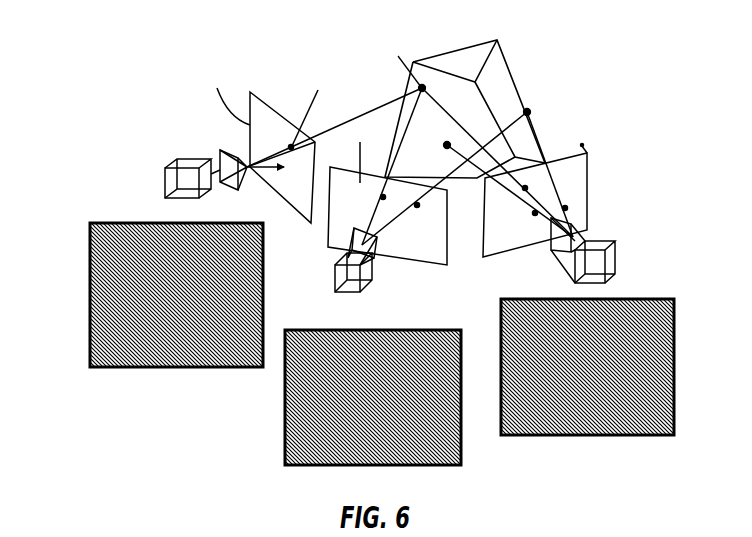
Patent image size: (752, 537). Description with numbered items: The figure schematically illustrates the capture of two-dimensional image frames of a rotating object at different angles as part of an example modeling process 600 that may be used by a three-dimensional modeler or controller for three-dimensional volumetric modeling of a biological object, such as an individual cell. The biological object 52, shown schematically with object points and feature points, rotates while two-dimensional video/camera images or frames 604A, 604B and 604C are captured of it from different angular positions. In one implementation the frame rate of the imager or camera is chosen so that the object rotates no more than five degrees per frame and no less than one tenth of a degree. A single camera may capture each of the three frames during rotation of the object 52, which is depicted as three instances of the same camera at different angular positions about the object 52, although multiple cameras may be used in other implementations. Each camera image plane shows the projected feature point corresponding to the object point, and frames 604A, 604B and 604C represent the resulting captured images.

The modeling process 600 is at (54, 134).
The biological object 52 is at (527, 90).
The frame 604A is at (89, 292).
The frame 604B is at (284, 437).
The frame 604C is at (675, 382).